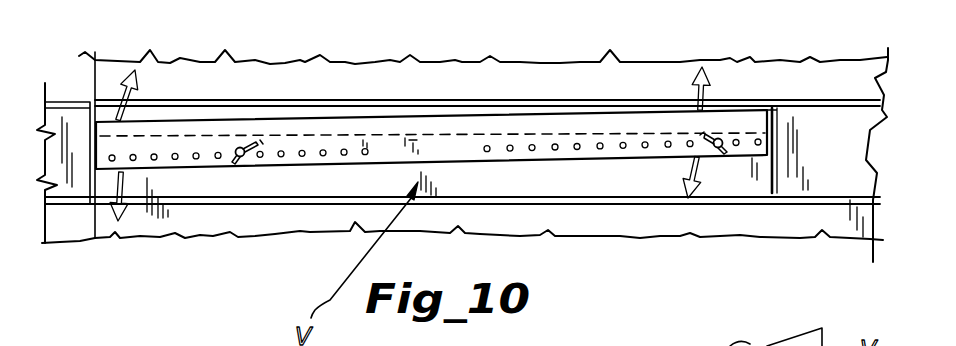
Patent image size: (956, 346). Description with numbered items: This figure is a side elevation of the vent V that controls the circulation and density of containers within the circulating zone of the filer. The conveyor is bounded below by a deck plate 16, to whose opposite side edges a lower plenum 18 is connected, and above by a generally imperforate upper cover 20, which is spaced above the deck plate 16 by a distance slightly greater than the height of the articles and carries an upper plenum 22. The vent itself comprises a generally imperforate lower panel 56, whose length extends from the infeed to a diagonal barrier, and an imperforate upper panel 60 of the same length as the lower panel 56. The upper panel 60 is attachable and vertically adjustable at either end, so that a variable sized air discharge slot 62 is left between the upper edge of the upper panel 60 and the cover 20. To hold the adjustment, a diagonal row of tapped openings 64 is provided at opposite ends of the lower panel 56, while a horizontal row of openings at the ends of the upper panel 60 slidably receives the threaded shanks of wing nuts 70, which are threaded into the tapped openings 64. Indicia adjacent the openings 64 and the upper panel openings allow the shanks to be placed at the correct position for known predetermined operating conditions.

The deck plate 16 is at (653, 202).
The lower plenum 18 is at (232, 218).
The upper cover 20 is at (552, 102).
The upper plenum 22 is at (454, 86).
The lower panel 56 is at (497, 185).
The upper panel 60 is at (332, 128).
The air discharge slot 62 is at (207, 112).
The openings 64 is at (663, 342).
The wing nuts 70 is at (243, 147).